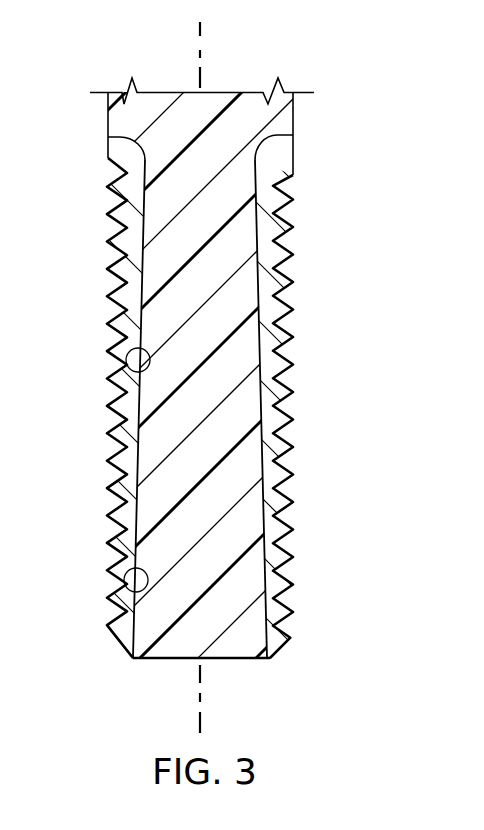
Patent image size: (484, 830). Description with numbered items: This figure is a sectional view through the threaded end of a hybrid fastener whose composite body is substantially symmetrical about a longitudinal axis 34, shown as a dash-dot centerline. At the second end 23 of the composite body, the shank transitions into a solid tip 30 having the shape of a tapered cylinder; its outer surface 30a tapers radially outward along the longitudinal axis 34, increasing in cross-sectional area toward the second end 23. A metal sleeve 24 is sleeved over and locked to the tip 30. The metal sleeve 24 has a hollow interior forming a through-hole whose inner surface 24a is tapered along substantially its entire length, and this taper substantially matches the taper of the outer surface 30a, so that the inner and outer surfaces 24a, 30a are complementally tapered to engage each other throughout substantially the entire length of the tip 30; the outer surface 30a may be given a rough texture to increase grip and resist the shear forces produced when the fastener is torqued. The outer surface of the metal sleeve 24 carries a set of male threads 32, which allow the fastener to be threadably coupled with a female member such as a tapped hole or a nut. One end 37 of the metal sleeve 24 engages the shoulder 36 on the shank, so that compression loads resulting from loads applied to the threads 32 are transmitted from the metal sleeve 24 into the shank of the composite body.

The second end 23 is at (101, 674).
The metal sleeve 24 is at (297, 316).
The inner surface 24a is at (124, 579).
The tip 30 is at (240, 661).
The outer surface 30a is at (150, 357).
The male threads 32 is at (108, 442).
The longitudinal axis 34 is at (202, 33).
The shoulder 36 is at (118, 141).
The end of the metal sleeve 37 is at (112, 127).